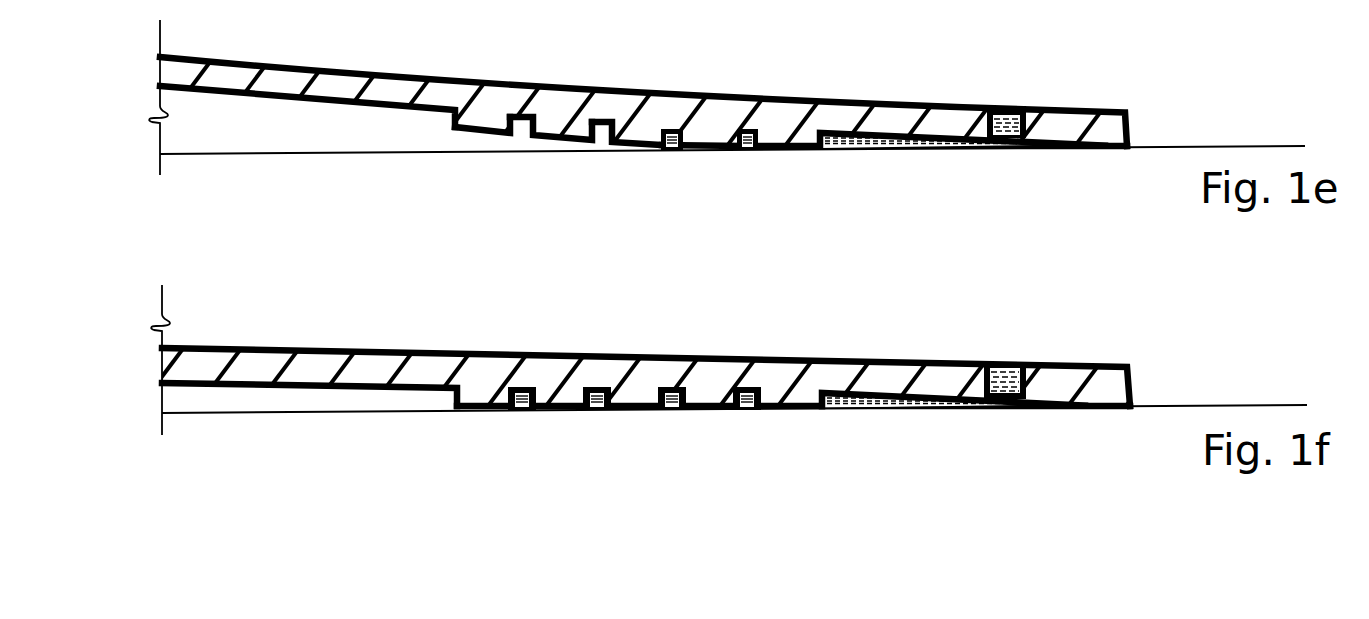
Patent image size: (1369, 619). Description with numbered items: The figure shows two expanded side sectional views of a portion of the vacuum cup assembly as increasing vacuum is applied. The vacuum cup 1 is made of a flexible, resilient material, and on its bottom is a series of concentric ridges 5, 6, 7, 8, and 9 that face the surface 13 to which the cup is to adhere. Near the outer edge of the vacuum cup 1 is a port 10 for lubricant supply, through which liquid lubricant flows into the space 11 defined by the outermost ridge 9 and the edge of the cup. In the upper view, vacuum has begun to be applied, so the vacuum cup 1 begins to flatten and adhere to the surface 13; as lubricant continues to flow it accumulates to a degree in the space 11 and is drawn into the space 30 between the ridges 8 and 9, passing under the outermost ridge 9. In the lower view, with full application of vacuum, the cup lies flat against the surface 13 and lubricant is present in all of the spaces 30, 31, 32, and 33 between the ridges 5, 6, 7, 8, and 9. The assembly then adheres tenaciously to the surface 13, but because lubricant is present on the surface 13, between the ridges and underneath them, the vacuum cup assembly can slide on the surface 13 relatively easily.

In FIG. 1e, the vacuum cup 1 is at (228, 58).
In FIG. 1f, the vacuum cup 1 is at (210, 345).
In FIG. 1e, the concentric ridge 5 is at (484, 125).
In FIG. 1f, the concentric ridge 5 is at (486, 403).
In FIG. 1e, the concentric ridge 6 is at (566, 130).
In FIG. 1f, the concentric ridge 6 is at (560, 400).
In FIG. 1e, the concentric ridge 7 is at (647, 143).
In FIG. 1f, the concentric ridge 7 is at (637, 400).
In FIG. 1e, the concentric ridge 8 is at (703, 148).
In FIG. 1f, the concentric ridge 8 is at (717, 400).
In FIG. 1e, the outermost ridge 9 is at (793, 150).
In FIG. 1f, the outermost ridge 9 is at (793, 400).
In FIG. 1e, the port 10 is at (1007, 115).
In FIG. 1f, the port 10 is at (1010, 365).
In FIG. 1e, the space 11 is at (856, 140).
In FIG. 1f, the space 11 is at (855, 412).
In FIG. 1e, the surface 13 is at (1226, 146).
In FIG. 1f, the surface 13 is at (1228, 405).
In FIG. 1e, the space between ridges 30 is at (745, 150).
In FIG. 1f, the space between ridges 30 is at (747, 413).
In FIG. 1f, the space between ridges 31 is at (668, 413).
In FIG. 1f, the space between ridges 32 is at (600, 412).
In FIG. 1f, the space between ridges 33 is at (522, 412).